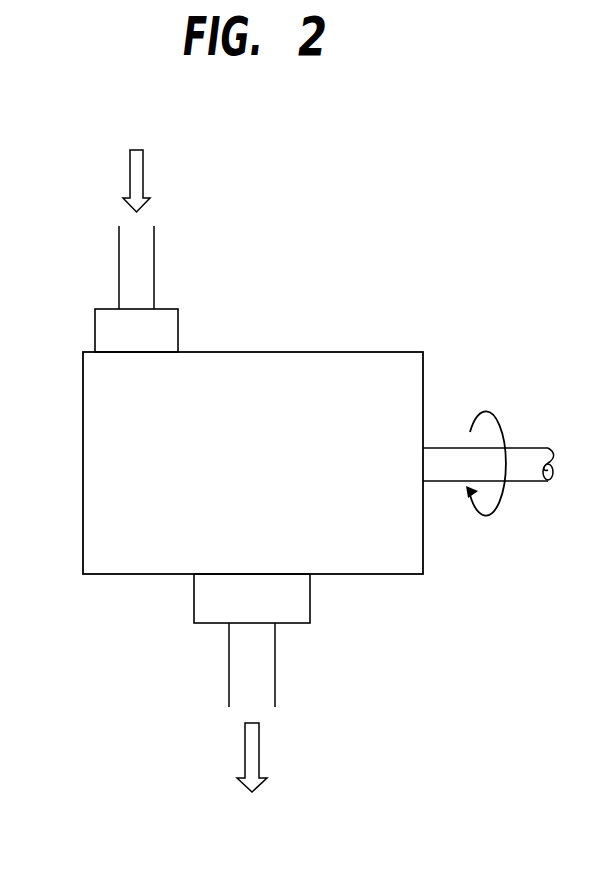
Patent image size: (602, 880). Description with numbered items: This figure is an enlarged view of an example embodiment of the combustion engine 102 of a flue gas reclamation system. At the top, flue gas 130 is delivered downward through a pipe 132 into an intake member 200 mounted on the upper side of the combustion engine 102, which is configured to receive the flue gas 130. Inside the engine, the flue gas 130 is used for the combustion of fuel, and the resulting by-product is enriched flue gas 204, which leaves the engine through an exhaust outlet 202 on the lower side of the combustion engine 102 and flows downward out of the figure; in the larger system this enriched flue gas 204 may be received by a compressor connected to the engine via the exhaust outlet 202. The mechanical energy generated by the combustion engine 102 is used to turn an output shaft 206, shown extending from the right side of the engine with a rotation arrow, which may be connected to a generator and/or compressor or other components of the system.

The combustion engine 102 is at (370, 352).
The flue gas 130 is at (172, 172).
The pipe 132 is at (154, 263).
The intake member 200 is at (178, 330).
The exhaust outlet 202 is at (310, 599).
The enriched flue gas 204 is at (304, 760).
The output shaft 206 is at (525, 448).